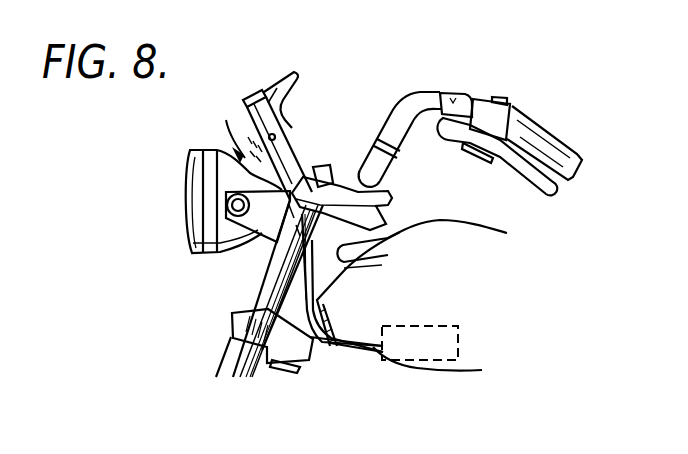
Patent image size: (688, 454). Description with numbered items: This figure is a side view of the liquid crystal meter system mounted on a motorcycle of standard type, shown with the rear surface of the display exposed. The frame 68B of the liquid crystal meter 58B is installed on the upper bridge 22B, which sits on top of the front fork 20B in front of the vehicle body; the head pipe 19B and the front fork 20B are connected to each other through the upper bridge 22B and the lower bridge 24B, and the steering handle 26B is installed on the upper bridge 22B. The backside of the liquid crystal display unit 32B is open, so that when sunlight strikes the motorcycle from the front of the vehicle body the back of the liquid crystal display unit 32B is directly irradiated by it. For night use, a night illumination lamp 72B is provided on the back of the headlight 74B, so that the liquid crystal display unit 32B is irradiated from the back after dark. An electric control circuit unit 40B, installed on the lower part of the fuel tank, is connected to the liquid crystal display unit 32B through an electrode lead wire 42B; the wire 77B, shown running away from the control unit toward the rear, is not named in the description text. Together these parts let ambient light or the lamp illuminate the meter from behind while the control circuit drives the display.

The head pipe 19B is at (368, 286).
The front fork 20B is at (260, 273).
The upper bridge 22B is at (386, 210).
The lower bridge 24B is at (232, 316).
The steering handle 26B is at (420, 90).
The liquid crystal display unit 32B is at (294, 116).
The electric control circuit unit 40B is at (432, 337).
The electrode lead wire 42B is at (382, 348).
The liquid crystal meter 58B is at (231, 92).
The frame 68B is at (245, 93).
The night illumination lamp 72B is at (230, 142).
The headlight 74B is at (188, 188).
The wire 77B is at (452, 373).